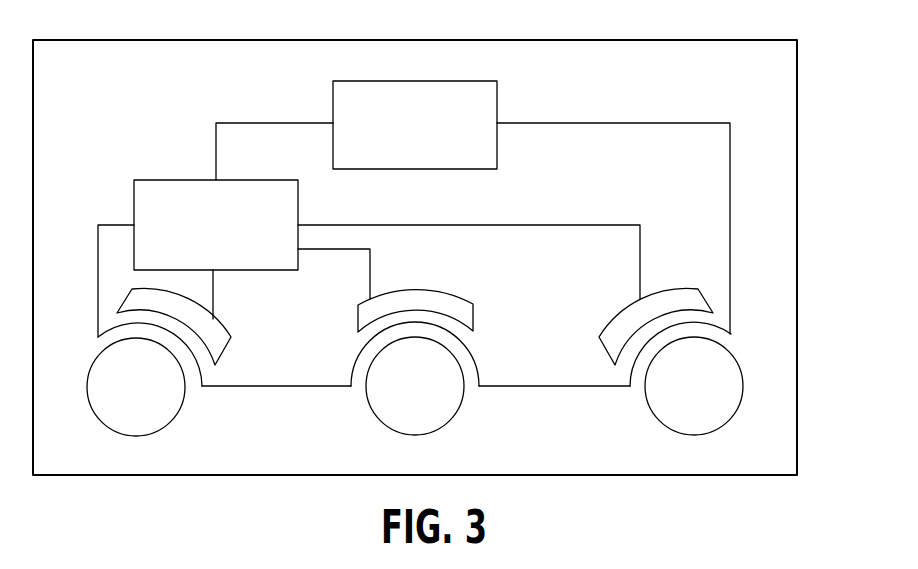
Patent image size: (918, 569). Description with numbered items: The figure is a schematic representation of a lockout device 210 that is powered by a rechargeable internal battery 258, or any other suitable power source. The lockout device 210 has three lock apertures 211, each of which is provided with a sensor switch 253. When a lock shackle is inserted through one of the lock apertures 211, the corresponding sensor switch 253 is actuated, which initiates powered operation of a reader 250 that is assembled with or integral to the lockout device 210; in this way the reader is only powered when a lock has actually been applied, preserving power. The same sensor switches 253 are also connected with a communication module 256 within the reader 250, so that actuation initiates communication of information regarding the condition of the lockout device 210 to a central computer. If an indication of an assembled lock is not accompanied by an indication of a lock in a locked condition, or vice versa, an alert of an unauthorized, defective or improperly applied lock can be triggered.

The lockout device 210 is at (825, 561).
The lock apertures 211 is at (182, 403).
The reader 250 is at (515, 275).
The sensor switches 253 is at (229, 340).
The communication module 256 is at (234, 242).
The rechargeable internal battery 258 is at (431, 139).